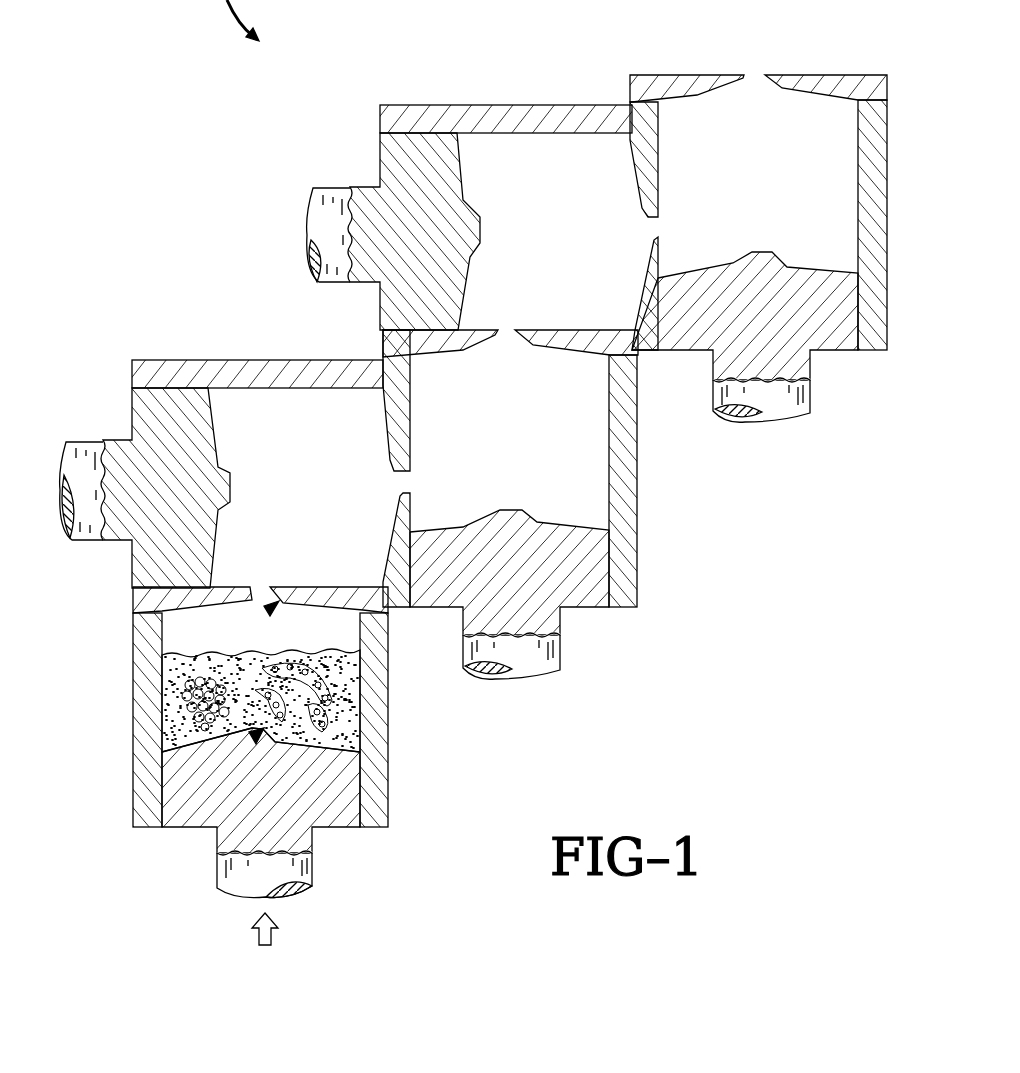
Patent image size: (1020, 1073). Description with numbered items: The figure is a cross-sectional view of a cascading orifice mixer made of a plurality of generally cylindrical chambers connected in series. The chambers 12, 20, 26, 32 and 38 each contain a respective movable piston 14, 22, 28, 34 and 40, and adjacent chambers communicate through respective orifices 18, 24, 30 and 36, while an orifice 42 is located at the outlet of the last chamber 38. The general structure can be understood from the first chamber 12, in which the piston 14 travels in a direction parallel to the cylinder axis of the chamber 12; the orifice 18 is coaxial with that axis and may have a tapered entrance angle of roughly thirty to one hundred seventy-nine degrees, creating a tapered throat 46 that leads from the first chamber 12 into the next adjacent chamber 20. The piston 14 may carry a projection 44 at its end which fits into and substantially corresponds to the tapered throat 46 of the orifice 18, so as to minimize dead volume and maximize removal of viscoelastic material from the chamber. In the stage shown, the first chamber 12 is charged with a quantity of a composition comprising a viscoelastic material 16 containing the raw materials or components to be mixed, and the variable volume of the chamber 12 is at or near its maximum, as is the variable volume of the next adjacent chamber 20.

The first chamber 12 is at (381, 772).
The piston 14 is at (197, 817).
The viscoelastic material 16 is at (355, 714).
The orifice 18 is at (258, 587).
The chamber 20 is at (244, 360).
The piston 22 is at (193, 432).
The orifice 24 is at (400, 485).
The chamber 26 is at (628, 465).
The piston 28 is at (563, 537).
The orifice 30 is at (510, 330).
The chamber 32 is at (532, 105).
The piston 34 is at (437, 177).
The orifice 36 is at (655, 228).
The last chamber 38 is at (862, 160).
The piston 40 is at (795, 270).
The orifice 42 is at (746, 75).
The projection 44 is at (259, 731).
The tapered throat 46 is at (274, 605).